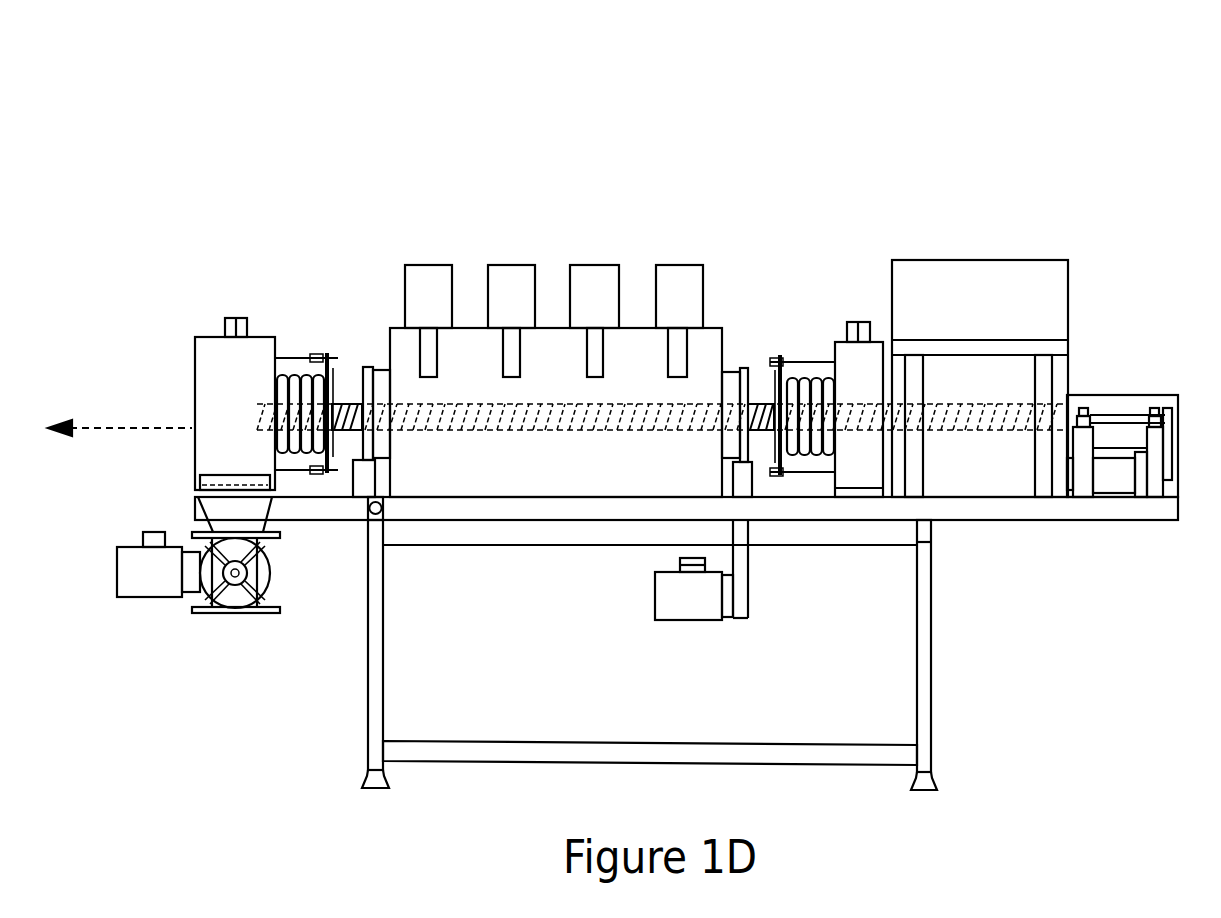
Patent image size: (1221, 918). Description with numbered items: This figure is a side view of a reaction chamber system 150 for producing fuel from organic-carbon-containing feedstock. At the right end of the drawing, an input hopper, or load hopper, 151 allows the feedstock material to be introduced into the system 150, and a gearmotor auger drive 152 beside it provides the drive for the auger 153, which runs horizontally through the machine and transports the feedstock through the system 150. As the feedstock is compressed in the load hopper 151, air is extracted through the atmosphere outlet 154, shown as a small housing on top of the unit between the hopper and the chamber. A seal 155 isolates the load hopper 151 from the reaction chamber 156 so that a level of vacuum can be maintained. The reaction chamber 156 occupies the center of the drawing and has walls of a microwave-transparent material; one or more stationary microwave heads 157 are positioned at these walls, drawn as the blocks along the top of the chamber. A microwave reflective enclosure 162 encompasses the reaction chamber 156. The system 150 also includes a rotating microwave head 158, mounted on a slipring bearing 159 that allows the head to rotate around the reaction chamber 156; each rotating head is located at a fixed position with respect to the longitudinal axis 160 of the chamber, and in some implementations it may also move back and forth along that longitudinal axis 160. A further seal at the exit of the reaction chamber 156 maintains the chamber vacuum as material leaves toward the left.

The reaction chamber system 150 is at (891, 164).
The input hopper 151 is at (978, 290).
The gearmotor auger drive 152 is at (1125, 497).
The auger 153 is at (697, 412).
The atmosphere outlet 154 is at (862, 322).
The seal 155 is at (800, 448).
The reaction chamber 156 is at (640, 345).
The stationary microwave heads 157 is at (503, 282).
The rotating microwave head 158 is at (695, 610).
The slipring bearing 159 is at (297, 388).
The longitudinal axis 160 is at (128, 426).
The microwave reflective enclosure 162 is at (555, 328).